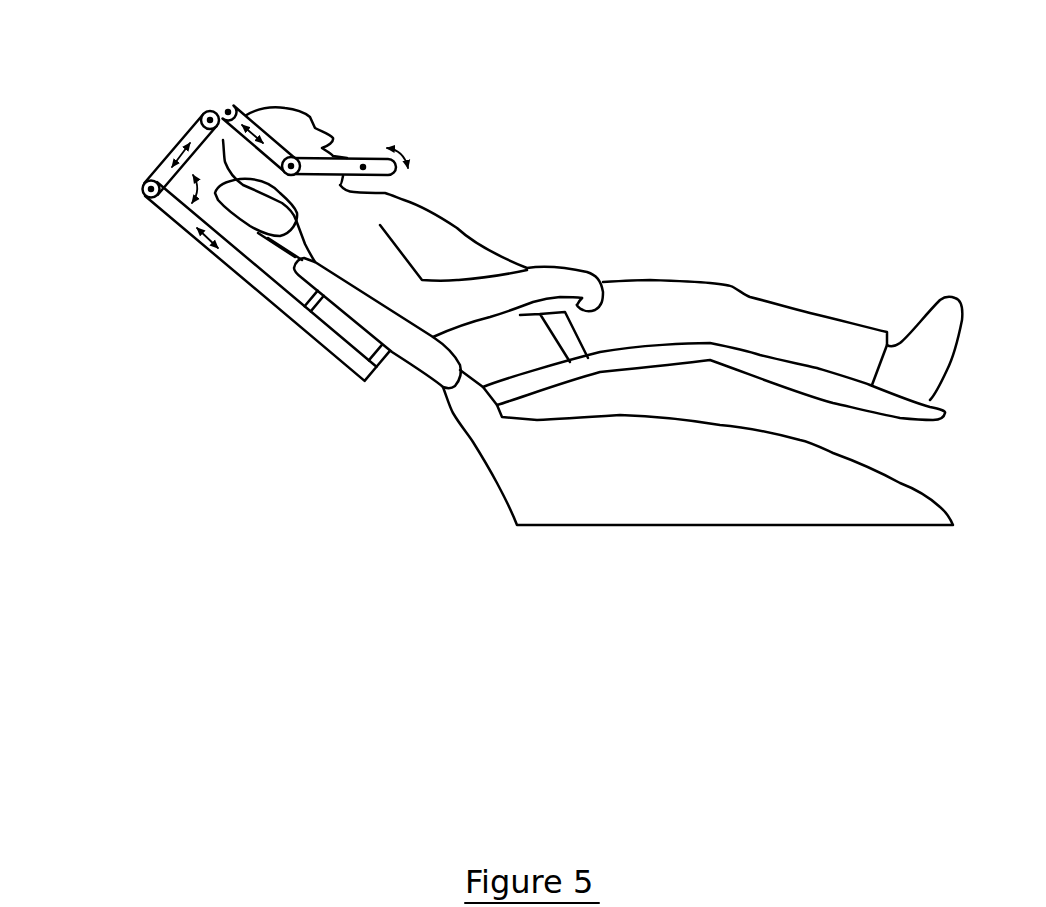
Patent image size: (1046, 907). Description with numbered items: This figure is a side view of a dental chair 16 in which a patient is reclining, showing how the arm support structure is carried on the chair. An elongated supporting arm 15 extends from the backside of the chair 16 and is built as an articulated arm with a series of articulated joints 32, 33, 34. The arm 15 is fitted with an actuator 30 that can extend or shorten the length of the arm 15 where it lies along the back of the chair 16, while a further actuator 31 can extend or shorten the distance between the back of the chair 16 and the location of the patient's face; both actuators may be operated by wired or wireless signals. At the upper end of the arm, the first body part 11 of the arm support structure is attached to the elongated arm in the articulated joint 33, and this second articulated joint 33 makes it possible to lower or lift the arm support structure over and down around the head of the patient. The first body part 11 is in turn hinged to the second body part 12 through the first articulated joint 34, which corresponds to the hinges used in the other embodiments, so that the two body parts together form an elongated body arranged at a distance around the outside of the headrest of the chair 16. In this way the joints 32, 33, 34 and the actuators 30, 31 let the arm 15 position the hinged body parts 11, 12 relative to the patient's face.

The first body part 11 is at (229, 111).
The second body part 12 is at (366, 164).
The supporting arm 15 is at (282, 298).
The dental chair 16 is at (575, 473).
The actuator 30 is at (244, 281).
The actuator 31 is at (173, 148).
The articulated joint 32 is at (143, 187).
The articulated joint 33 is at (206, 112).
The articulated joint 34 is at (297, 159).